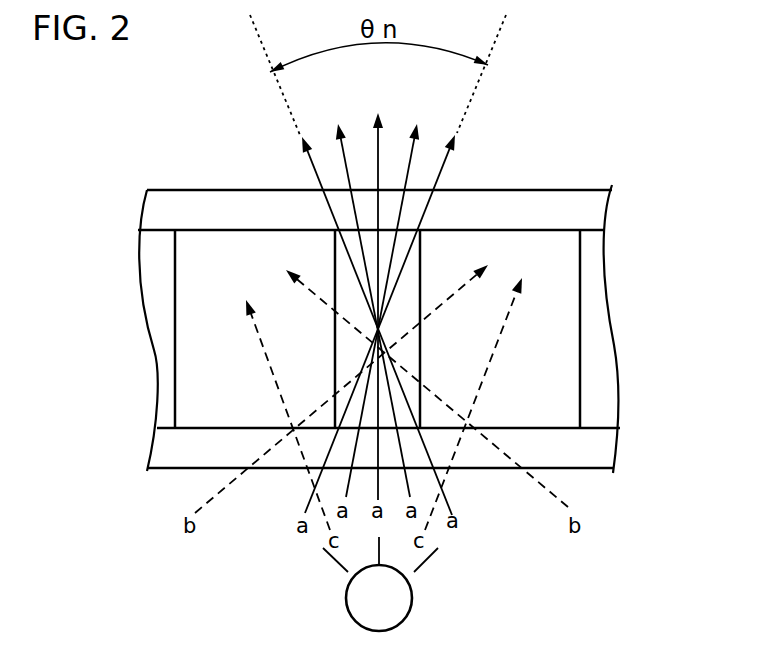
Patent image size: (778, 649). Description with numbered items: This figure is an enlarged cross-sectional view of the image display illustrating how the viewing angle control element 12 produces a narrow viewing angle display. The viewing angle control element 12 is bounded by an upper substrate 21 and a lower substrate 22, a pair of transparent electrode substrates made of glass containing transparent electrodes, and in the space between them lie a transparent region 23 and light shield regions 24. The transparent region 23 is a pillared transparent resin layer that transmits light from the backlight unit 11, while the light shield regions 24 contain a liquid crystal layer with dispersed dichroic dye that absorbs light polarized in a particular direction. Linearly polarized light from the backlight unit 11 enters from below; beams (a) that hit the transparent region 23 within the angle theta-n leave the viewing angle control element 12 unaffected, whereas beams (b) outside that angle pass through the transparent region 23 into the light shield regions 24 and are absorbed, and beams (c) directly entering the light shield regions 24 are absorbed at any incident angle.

The backlight unit 11 is at (405, 598).
The viewing angle control element 12 is at (113, 190).
The upper substrate 21 is at (572, 196).
The lower substrate 22 is at (608, 452).
The transparent region 23 is at (410, 275).
The light shield regions 24 is at (230, 250).